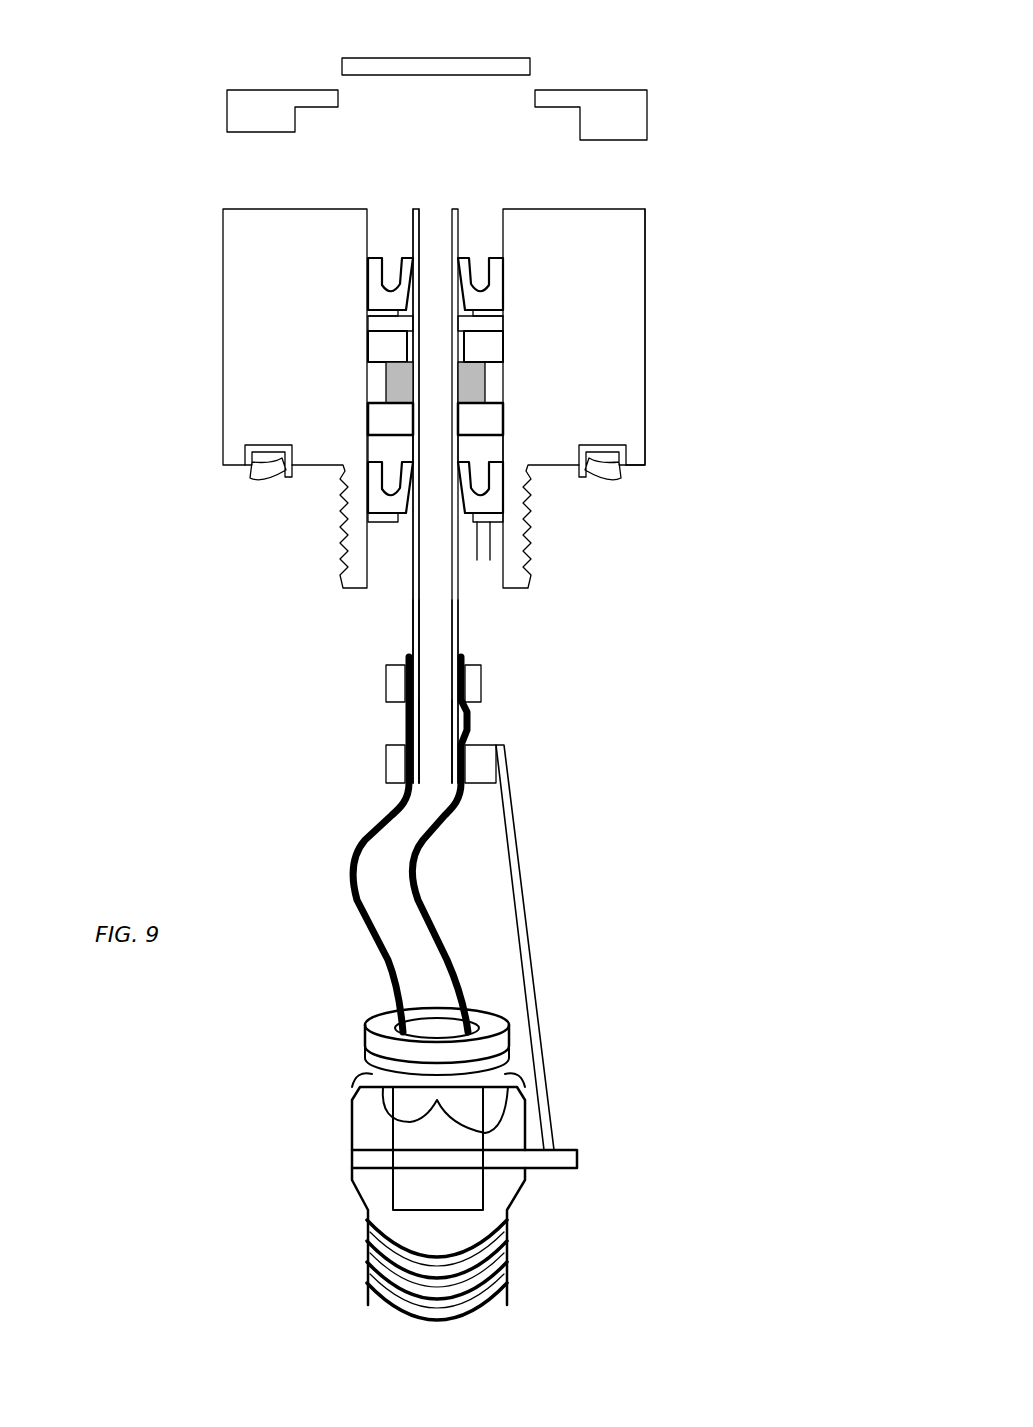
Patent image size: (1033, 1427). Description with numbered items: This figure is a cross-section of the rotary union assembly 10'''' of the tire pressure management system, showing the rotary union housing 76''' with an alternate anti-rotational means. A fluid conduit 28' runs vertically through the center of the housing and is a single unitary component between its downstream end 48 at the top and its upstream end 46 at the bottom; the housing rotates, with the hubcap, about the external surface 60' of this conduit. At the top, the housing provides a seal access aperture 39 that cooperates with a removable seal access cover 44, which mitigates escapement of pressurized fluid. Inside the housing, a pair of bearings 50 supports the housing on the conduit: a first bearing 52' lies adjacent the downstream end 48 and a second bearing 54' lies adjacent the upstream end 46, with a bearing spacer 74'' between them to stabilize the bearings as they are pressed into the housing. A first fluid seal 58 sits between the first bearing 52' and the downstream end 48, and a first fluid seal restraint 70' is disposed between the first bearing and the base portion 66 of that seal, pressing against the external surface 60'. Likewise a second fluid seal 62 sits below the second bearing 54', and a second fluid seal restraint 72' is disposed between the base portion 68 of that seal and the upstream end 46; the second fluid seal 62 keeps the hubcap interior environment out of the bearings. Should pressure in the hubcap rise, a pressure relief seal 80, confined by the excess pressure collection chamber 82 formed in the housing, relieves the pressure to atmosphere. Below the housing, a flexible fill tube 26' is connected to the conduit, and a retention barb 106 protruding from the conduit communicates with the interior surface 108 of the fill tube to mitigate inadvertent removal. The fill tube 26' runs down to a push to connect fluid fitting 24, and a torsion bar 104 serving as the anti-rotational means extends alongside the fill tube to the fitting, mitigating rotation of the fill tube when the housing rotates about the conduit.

The rotary union assembly 10'''' is at (460, 297).
The seal access aperture 39 is at (330, 75).
The seal access cover 44 is at (450, 68).
The rotary union housing 76''' is at (655, 297).
The downstream end 48 is at (441, 200).
The external surface 60' is at (390, 457).
The fluid conduit 28' is at (359, 691).
The first fluid seal 58 is at (360, 282).
The base portion 66 is at (377, 303).
The first fluid seal restraint 70' is at (265, 311).
The first bearing 52' is at (261, 362).
The bearing spacer 74'' is at (381, 382).
The second bearing 54' is at (275, 432).
The excess pressure collection chamber 82 is at (262, 432).
The pair of bearings 50 is at (512, 400).
The pressure relief seal 80 is at (583, 470).
The second fluid seal 62 is at (512, 510).
The base portion 68 is at (490, 522).
The second fluid seal restraint 72' is at (586, 609).
The fill tube 26' is at (333, 844).
The interior surface 108 is at (408, 858).
The retention barb 106 is at (482, 726).
The upstream end 46 is at (437, 770).
The torsion bar 104 is at (533, 1002).
The push to connect fluid fitting 24 is at (495, 1177).